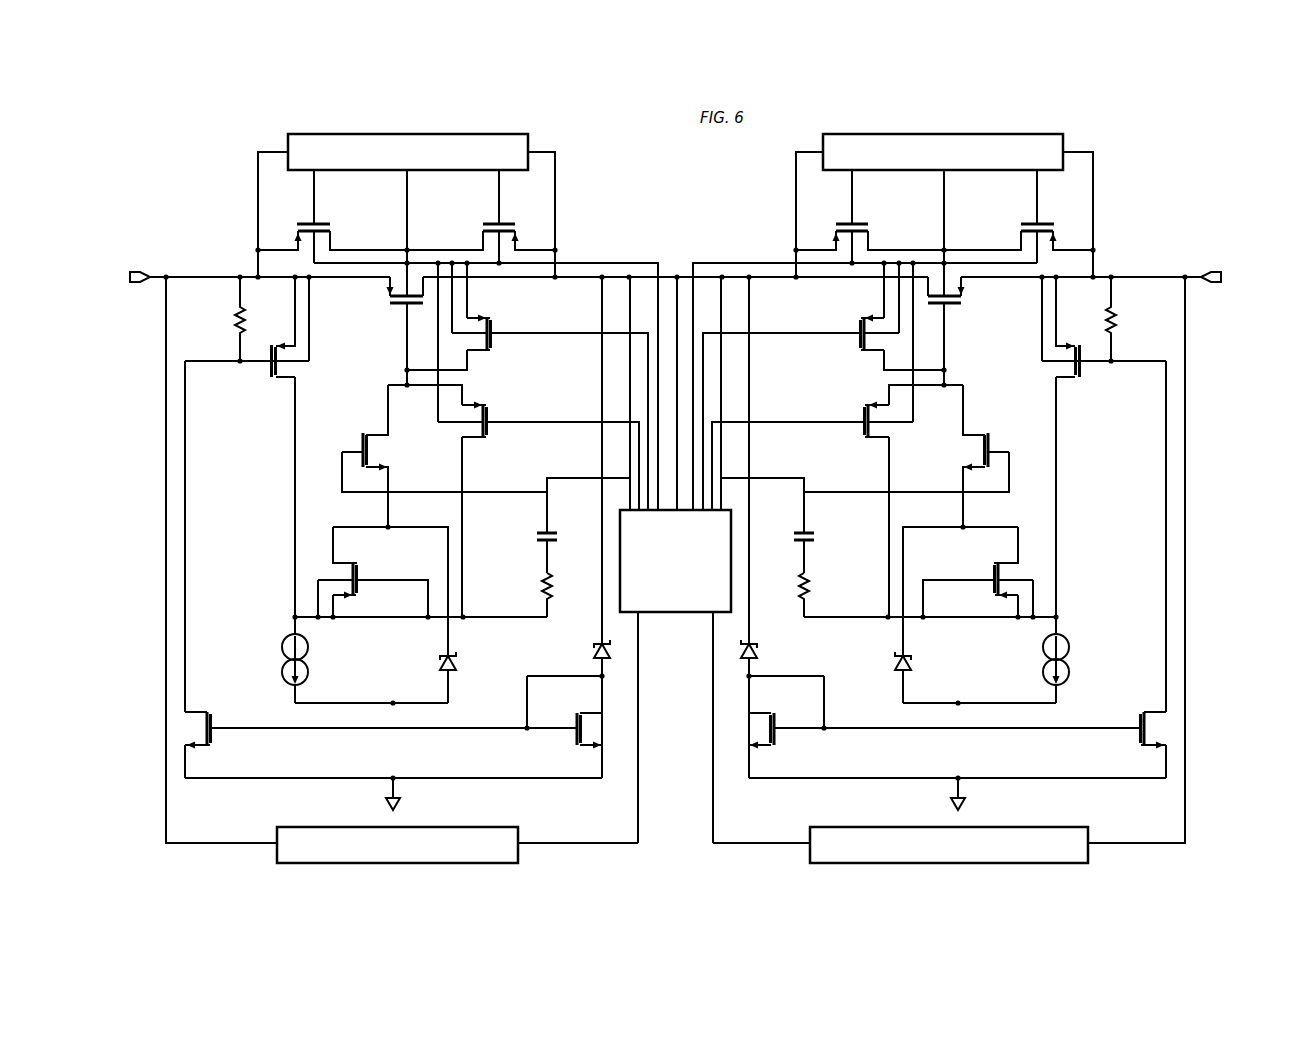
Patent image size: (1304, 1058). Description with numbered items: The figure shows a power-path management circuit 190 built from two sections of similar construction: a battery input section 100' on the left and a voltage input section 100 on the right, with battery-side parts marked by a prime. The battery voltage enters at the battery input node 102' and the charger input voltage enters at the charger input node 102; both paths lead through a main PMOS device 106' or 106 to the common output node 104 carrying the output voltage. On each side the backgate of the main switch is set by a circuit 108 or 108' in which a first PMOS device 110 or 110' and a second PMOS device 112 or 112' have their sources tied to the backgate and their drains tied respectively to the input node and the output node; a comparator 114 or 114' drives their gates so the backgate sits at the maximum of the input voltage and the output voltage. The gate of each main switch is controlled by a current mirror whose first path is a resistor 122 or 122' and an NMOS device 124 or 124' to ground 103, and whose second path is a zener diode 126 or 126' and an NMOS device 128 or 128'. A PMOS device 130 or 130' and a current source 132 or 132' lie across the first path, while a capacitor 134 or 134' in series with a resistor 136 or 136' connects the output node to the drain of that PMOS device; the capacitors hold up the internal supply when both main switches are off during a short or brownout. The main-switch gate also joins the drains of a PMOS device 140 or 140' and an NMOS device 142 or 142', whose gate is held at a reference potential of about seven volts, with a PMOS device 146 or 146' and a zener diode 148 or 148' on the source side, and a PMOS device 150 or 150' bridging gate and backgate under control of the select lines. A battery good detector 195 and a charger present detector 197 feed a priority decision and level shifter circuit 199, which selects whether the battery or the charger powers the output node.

The voltage input section 100 is at (984, 490).
The battery input section 100' is at (375, 490).
The charger input node 102 is at (1118, 295).
The battery input node 102' is at (241, 295).
The ground 103 is at (390, 777).
The circuit output node 104 is at (676, 275).
The PMOS device 106 is at (969, 331).
The PMOS device 106' is at (381, 331).
The backgate control circuit 108 is at (984, 498).
The backgate control circuit 108' is at (375, 498).
The first PMOS device 110 is at (1018, 216).
The first PMOS device 110' is at (332, 216).
The second PMOS device 112 is at (870, 216).
The second PMOS device 112' is at (481, 216).
The comparator 114 is at (943, 176).
The comparator 114' is at (408, 176).
The resistor 122 is at (1122, 320).
The resistor 122' is at (225, 320).
The NMOS device 124 is at (970, 735).
The NMOS device 124' is at (381, 735).
The zener diode 126 is at (778, 648).
The zener diode 126' is at (571, 648).
The NMOS device 128 is at (790, 727).
The NMOS device 128' is at (560, 727).
The PMOS device 130 is at (1097, 344).
The PMOS device 130' is at (252, 344).
The current source 132 is at (1072, 660).
The current source 132' is at (278, 660).
The capacitor 134 is at (818, 525).
The capacitor 134' is at (530, 525).
The resistor 136 is at (818, 595).
The resistor 136' is at (530, 595).
The PMOS device 140 is at (837, 498).
The PMOS device 140' is at (513, 498).
The NMOS device 142 is at (882, 456).
The NMOS device 142' is at (467, 456).
The PMOS device 146 is at (978, 579).
The PMOS device 146' is at (373, 579).
The zener diode 148 is at (908, 658).
The zener diode 148' is at (443, 658).
The PMOS device 150 is at (823, 402).
The PMOS device 150' is at (527, 402).
The circuit 190 is at (606, 143).
The battery good detector 195 is at (277, 835).
The charger present detector 197 is at (977, 837).
The priority decision and level shifter circuit 199 is at (677, 614).